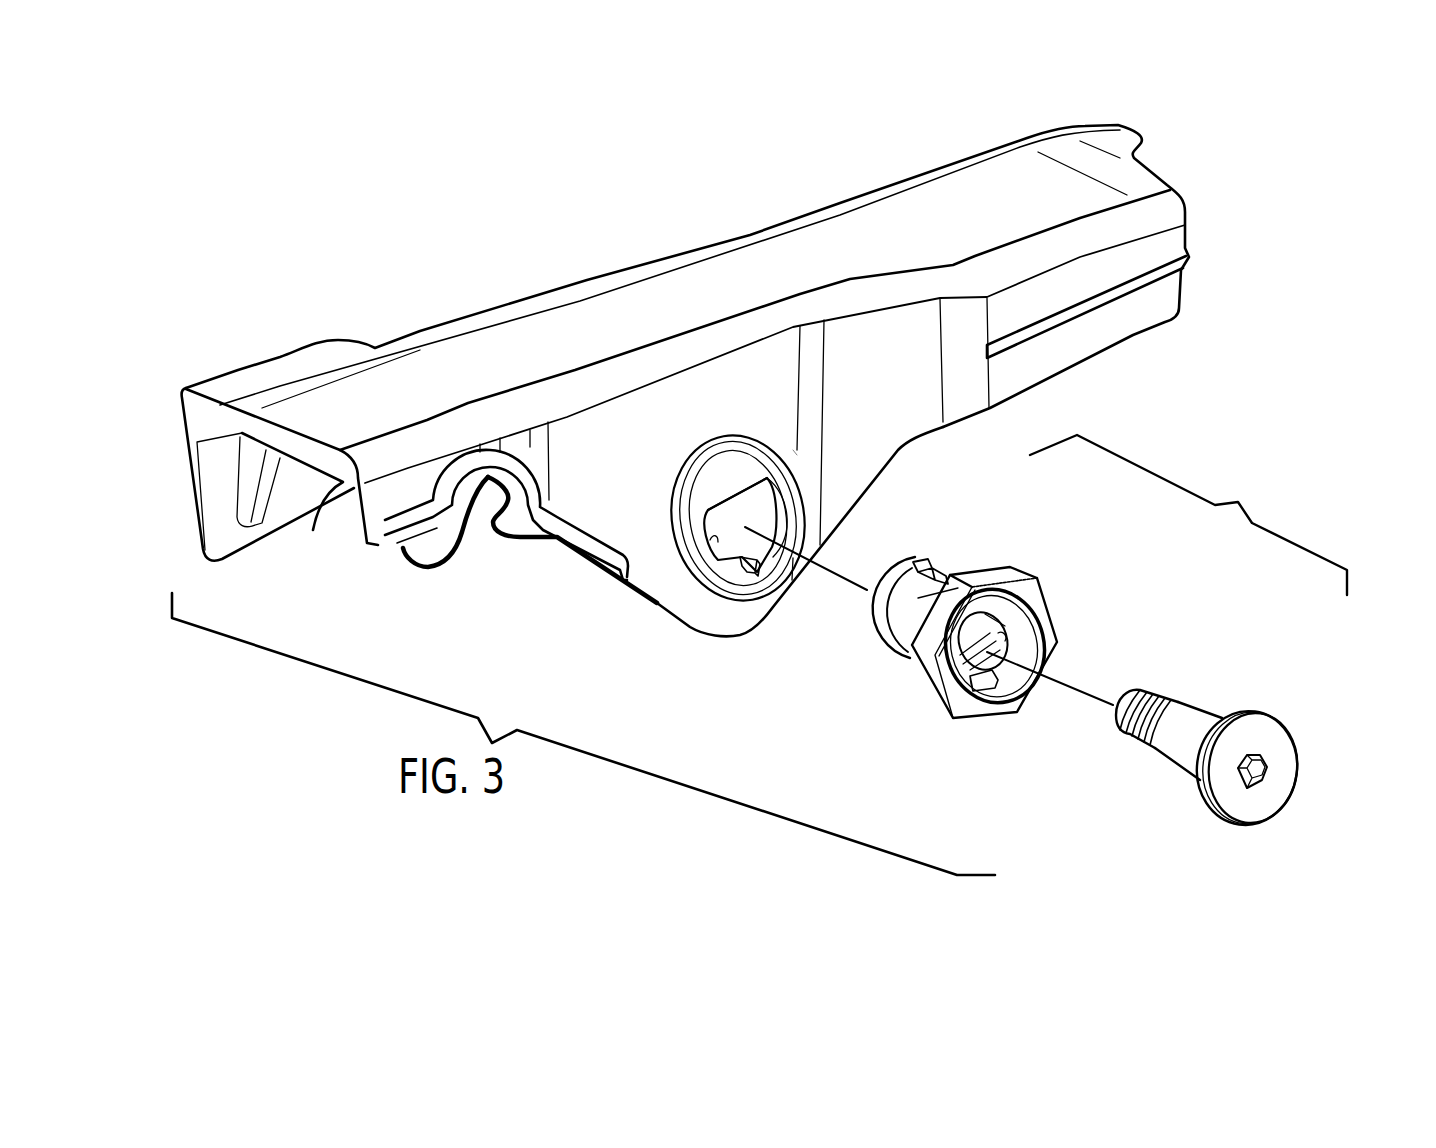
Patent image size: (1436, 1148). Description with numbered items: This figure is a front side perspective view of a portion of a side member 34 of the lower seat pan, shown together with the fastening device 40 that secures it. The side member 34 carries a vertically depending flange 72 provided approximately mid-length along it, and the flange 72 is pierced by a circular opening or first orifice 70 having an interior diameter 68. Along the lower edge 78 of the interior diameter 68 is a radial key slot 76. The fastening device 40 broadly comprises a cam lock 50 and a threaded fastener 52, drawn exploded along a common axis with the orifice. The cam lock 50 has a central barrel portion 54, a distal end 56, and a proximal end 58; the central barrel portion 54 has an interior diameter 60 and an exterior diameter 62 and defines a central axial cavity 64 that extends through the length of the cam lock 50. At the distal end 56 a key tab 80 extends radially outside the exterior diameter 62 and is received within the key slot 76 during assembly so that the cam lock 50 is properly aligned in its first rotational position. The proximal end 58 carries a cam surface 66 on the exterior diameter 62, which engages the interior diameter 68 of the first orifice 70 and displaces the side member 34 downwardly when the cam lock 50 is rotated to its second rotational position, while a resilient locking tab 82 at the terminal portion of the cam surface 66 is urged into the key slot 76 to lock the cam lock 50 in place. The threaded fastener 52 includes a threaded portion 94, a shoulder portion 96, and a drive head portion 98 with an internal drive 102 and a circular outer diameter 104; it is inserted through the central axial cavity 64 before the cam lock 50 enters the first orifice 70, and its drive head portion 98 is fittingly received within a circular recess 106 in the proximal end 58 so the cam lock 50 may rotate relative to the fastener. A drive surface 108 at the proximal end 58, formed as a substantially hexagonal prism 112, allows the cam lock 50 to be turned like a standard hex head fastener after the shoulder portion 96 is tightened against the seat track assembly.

The side member 34 is at (846, 234).
The fastening device 40 is at (1188, 515).
The cam lock 50 is at (964, 632).
The threaded fastener 52 is at (1227, 772).
The central barrel portion 54 is at (890, 648).
The distal end 56 is at (868, 620).
The proximal end 58 is at (1037, 595).
The interior diameter 60 is at (980, 643).
The exterior diameter 62 is at (887, 637).
The central axial cavity 64 is at (938, 672).
The cam surface 66 is at (995, 676).
The interior diameter 68 is at (790, 465).
The first orifice 70 is at (790, 465).
The vertically depending flange 72 is at (712, 622).
The radial key slot 76 is at (755, 573).
The lower edge 78 is at (752, 555).
The key tab 80 is at (922, 563).
The locking tab 82 is at (992, 688).
The threaded portion 94 is at (1120, 727).
The shoulder portion 96 is at (1183, 720).
The drive head portion 98 is at (1242, 810).
The internal drive 102 is at (1262, 773).
The circular outer diameter 104 is at (1285, 727).
The circular recess 106 is at (1037, 583).
The drive surface 108 is at (998, 573).
The hexagonal prism 112 is at (912, 575).